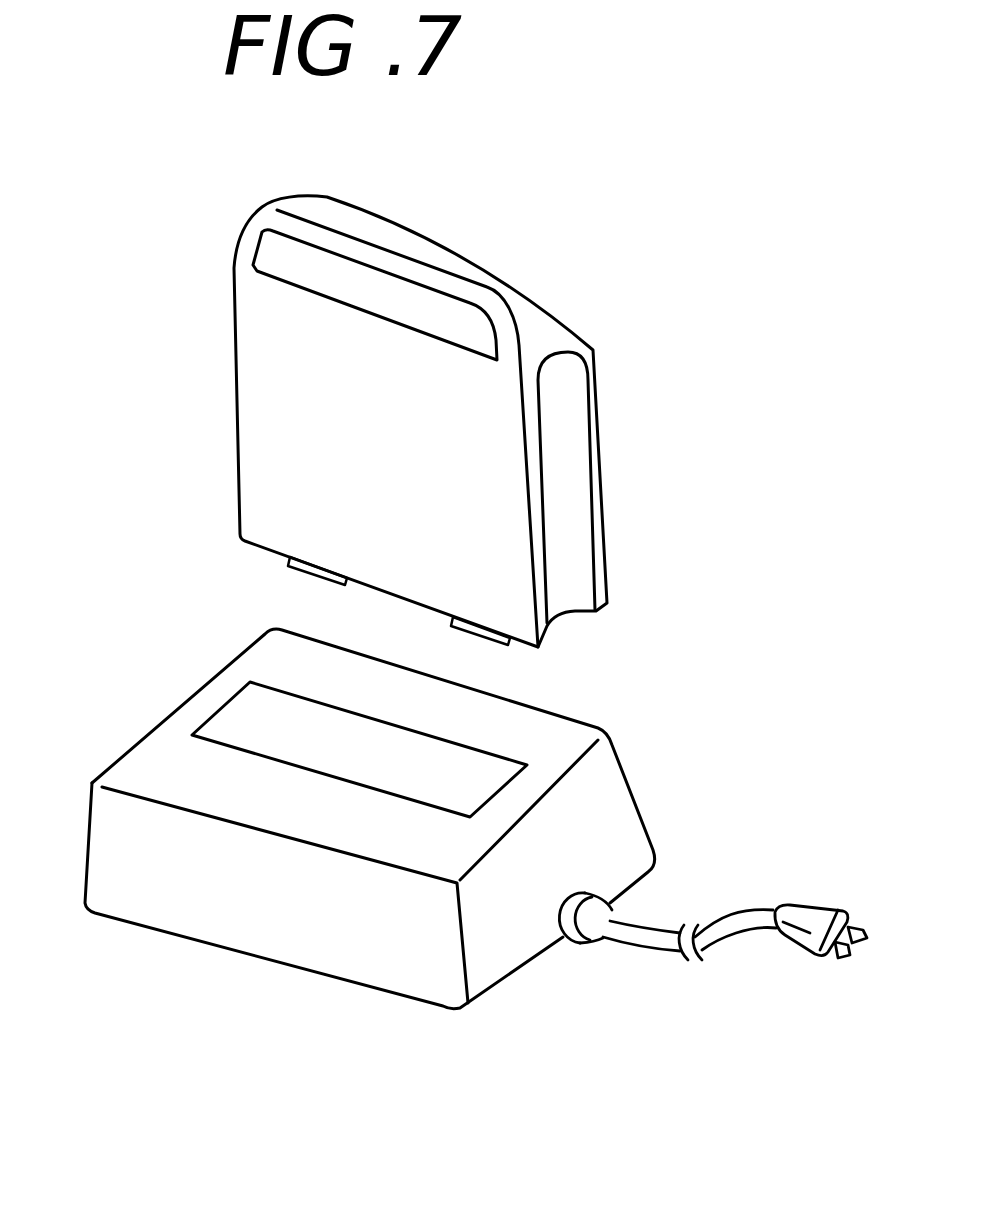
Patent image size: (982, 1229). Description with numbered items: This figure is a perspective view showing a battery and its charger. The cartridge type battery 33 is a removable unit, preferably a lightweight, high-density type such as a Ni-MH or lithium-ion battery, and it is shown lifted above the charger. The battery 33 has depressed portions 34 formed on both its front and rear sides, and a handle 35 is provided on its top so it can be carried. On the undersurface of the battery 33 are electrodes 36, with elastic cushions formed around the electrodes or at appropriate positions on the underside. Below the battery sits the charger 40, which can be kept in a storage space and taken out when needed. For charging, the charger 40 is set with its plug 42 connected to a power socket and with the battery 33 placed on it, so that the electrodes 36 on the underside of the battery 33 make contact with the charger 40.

The cartridge type battery 33 is at (252, 397).
The depressed portions 34 is at (577, 478).
The handle 35 is at (427, 255).
The electrodes 36 is at (302, 569).
The charger 40 is at (218, 932).
The plug 42 is at (817, 903).